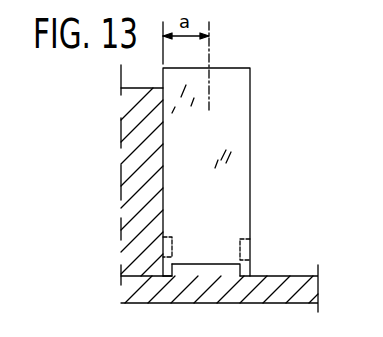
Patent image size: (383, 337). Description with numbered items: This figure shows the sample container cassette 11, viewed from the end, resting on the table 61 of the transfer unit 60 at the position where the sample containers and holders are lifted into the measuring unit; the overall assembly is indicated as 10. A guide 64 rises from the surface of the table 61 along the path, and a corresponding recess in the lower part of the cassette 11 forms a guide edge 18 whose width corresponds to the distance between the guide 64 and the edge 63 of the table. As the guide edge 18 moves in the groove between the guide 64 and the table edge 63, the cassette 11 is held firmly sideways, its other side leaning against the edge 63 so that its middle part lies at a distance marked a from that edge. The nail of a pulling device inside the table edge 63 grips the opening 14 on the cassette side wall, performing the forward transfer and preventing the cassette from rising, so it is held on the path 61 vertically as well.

The housing / display unit 10 is at (269, 81).
The sample container cassette 11 is at (250, 138).
The edge of the measuring table 63 is at (163, 147).
The opening 14 is at (168, 236).
The guide edge 18 is at (162, 266).
The transfer unit 60 is at (280, 258).
The table 61 is at (297, 275).
The guide 64 is at (188, 263).